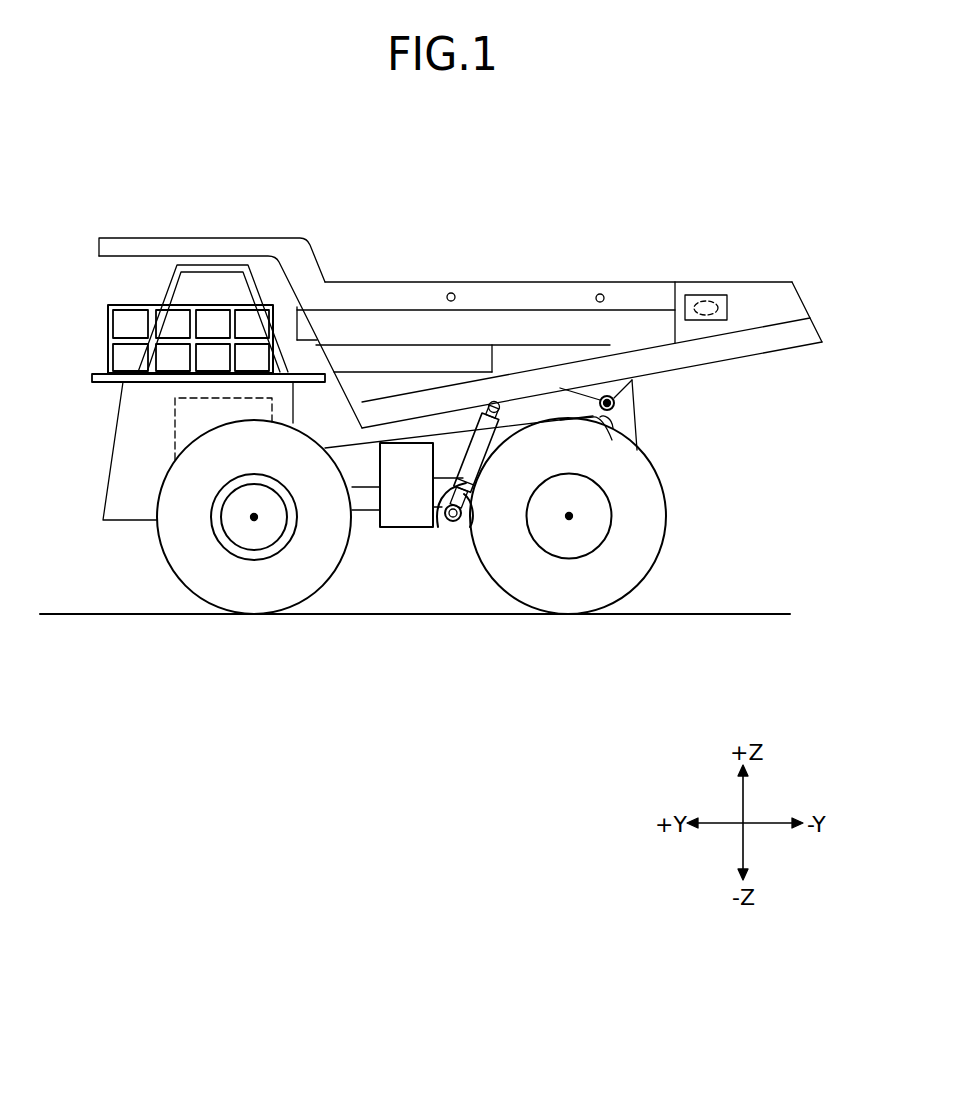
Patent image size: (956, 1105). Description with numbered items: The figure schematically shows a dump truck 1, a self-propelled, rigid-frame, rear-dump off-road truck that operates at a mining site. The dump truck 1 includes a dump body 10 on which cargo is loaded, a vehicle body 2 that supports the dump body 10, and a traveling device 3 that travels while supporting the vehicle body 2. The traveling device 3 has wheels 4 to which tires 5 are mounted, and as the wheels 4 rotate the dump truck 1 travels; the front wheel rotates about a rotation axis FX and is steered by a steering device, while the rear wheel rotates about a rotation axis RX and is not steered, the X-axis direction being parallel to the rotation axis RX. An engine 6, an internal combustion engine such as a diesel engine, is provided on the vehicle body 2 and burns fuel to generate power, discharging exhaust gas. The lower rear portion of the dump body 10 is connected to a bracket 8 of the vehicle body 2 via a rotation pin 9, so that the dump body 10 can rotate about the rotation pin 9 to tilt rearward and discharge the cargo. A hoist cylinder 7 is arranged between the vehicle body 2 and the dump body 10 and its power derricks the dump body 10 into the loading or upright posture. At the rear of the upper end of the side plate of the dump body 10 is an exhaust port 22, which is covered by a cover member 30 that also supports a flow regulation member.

The dump truck 1 is at (140, 210).
The vehicle body 2 is at (358, 475).
The traveling device 3 is at (667, 557).
The wheel 4 is at (270, 538).
The tire 5 is at (182, 567).
The engine 6 is at (187, 430).
The hoist cylinder 7 is at (452, 525).
The bracket 8 is at (617, 422).
The rotation pin 9 is at (607, 396).
The dump body 10 is at (448, 283).
The exhaust port 22 is at (727, 320).
The cover member 30 is at (700, 295).
The rotation axis of the front wheel FX is at (254, 519).
The rotation axis of the rear wheel RX is at (569, 518).